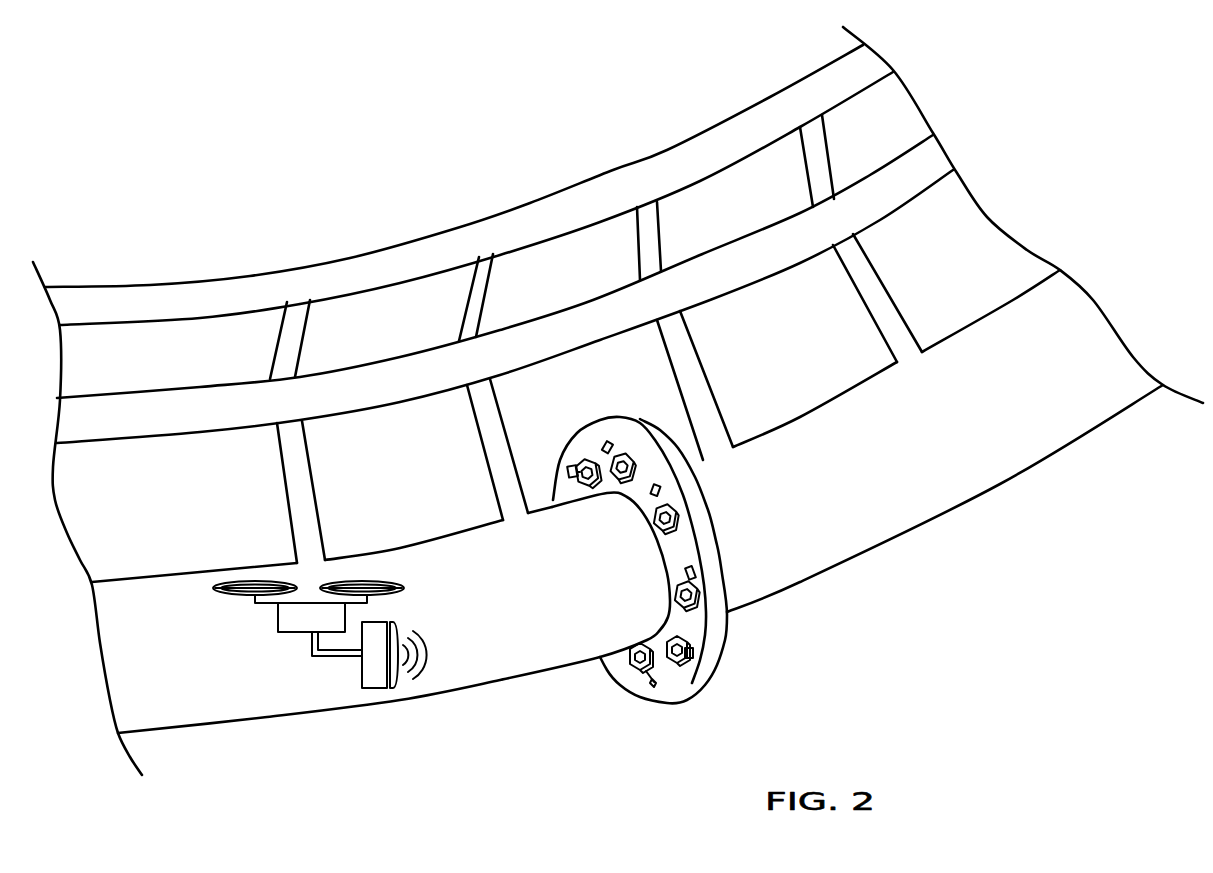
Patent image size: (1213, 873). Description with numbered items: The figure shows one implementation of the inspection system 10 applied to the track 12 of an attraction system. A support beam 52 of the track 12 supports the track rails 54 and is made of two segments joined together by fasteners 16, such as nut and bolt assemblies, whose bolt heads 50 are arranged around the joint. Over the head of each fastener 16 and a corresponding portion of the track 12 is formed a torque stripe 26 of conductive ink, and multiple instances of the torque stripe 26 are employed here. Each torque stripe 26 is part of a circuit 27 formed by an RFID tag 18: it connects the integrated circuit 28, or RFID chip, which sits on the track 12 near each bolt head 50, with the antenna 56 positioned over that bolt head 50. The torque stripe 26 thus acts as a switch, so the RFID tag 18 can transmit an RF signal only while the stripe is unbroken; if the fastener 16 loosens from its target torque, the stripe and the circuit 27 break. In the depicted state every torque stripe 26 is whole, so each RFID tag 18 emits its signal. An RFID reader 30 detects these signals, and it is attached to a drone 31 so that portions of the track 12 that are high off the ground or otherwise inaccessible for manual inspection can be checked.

The inspection system 10 is at (430, 134).
The track 12 is at (484, 194).
The track rails 54 is at (771, 97).
The support beam 52 is at (953, 510).
The antenna 56 is at (626, 457).
The RFID tag 18 is at (651, 540).
The fastener 16 is at (651, 540).
The circuit 27 is at (643, 459).
The torque stripe 26 is at (665, 523).
The integrated circuit 28 is at (570, 466).
The bolt head 50 is at (623, 452).
The drone 31 is at (295, 634).
The RFID reader 30 is at (362, 672).